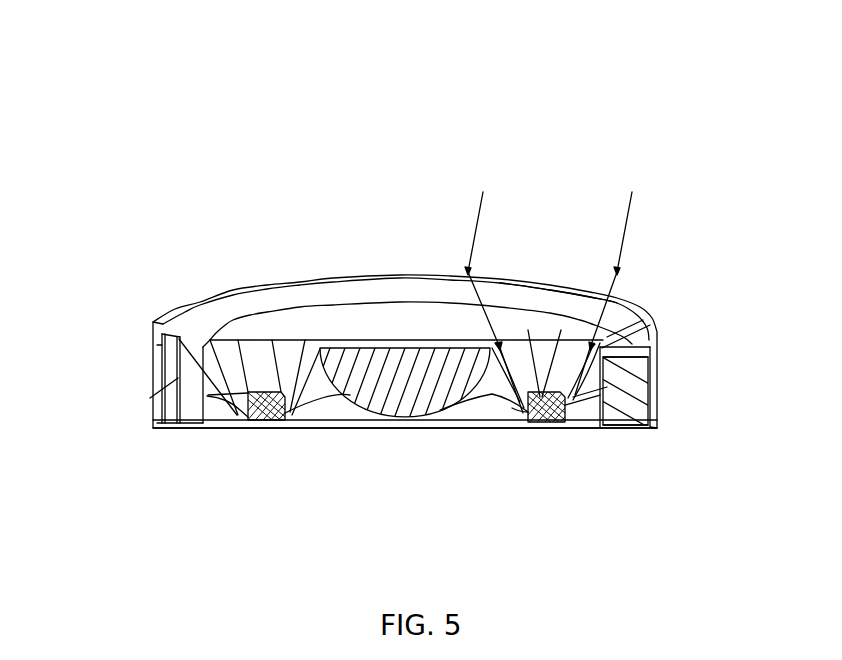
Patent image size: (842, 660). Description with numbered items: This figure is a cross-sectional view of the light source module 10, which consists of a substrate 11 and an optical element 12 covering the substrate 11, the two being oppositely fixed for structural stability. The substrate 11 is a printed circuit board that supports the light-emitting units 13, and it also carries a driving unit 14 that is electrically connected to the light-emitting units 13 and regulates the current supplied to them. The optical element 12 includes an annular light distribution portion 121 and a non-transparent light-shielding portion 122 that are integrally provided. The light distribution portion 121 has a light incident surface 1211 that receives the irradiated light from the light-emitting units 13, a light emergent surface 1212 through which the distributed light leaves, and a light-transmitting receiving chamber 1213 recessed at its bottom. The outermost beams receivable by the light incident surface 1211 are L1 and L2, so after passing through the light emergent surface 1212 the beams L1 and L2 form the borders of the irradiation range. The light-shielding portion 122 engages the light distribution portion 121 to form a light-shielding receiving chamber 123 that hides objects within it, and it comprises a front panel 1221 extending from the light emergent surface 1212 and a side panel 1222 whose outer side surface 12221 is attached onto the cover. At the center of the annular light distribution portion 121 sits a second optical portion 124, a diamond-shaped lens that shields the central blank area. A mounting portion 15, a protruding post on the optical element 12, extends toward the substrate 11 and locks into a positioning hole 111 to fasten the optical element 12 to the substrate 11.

The light source module 10 is at (556, 36).
The substrate 11 is at (415, 421).
The positioning hole 111 is at (165, 420).
The optical element 12 is at (403, 295).
The light distribution portion 121 is at (529, 315).
The light incident surface 1211 is at (566, 408).
The light emergent surface 1212 is at (564, 289).
The light-transmitting receiving chamber 1213 is at (520, 413).
The light-shielding portion 122 is at (650, 310).
The front panel 1221 is at (620, 306).
The side panel 1222 is at (158, 347).
The outer side surface 12221 is at (657, 407).
The light-shielding receiving chamber 123 is at (178, 378).
The second optical portion 124 is at (352, 414).
The light-emitting unit 13 is at (252, 421).
The driving unit 14 is at (655, 420).
The mounting portion 15 is at (192, 417).
The irradiated light beam L1 is at (494, 287).
The irradiated light beam L2 is at (612, 278).